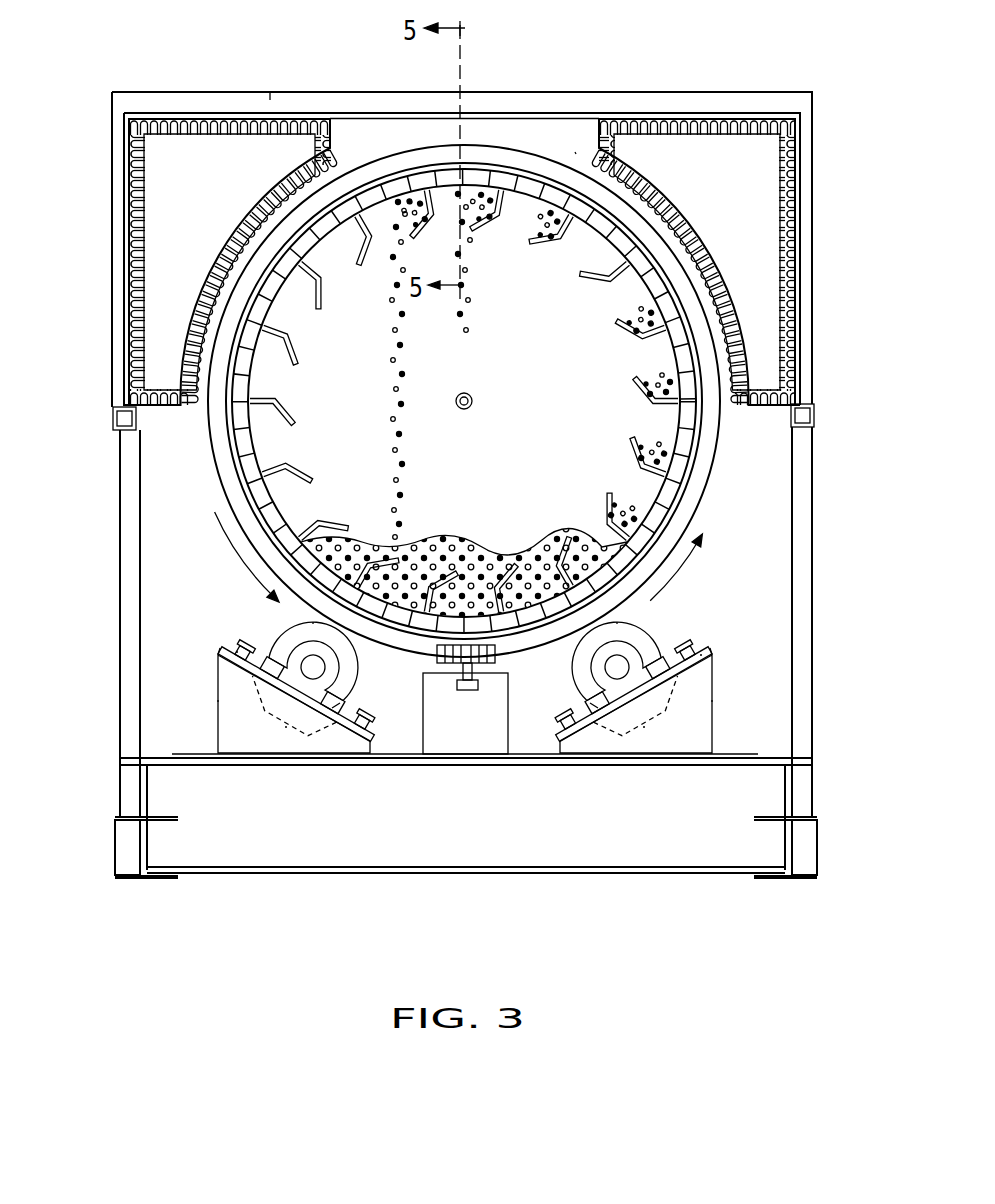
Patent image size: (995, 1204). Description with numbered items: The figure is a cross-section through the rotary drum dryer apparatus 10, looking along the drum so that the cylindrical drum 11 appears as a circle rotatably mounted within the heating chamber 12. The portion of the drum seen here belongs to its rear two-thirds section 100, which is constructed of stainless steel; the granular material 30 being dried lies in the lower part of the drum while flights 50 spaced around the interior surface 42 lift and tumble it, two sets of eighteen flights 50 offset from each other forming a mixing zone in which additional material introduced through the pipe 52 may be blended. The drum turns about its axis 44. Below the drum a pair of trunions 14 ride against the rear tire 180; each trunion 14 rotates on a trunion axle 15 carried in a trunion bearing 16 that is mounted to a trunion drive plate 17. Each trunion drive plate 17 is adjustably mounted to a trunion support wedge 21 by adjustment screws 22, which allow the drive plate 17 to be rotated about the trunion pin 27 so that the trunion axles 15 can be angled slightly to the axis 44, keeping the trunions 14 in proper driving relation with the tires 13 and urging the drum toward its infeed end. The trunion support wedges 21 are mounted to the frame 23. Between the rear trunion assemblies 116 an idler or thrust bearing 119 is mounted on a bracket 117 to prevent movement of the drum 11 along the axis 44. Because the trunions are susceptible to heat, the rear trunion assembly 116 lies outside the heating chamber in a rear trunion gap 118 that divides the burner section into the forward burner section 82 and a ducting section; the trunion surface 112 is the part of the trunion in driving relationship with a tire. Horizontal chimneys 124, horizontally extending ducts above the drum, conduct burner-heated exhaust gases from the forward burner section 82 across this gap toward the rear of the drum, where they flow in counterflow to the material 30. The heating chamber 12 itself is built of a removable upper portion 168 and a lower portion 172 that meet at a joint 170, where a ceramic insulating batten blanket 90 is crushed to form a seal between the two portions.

The rotary drum dryer apparatus 10 is at (501, 83).
The cylindrical drum 11 is at (428, 164).
The heating chamber 12 is at (217, 91).
The circumferential annular steel tires 13 is at (539, 163).
The trunions 14 is at (272, 657).
The trunion axles 15 is at (310, 660).
The trunion bearings 16 is at (332, 652).
The trunion drive plate 17 is at (266, 680).
The trunion support wedge 21 is at (217, 742).
The adjustment screws 22 is at (236, 651).
The frame 23 is at (547, 836).
The trunion pin 27 is at (287, 732).
The granular material 30 is at (648, 438).
The interior surface 42 is at (262, 300).
The axis 44 is at (456, 407).
The flights 50 is at (594, 278).
The pipe 52 is at (468, 393).
The forward burner section 82 is at (275, 91).
The ceramic insulating batten blanket 90 is at (141, 310).
The rear two-thirds section 100 is at (678, 490).
The trunion surface 112 is at (572, 652).
The rear trunion assembly 116 is at (373, 750).
The bracket 117 is at (509, 725).
The rear trunion gap 118 is at (374, 123).
The thrust bearing 119 is at (433, 655).
The horizontal chimneys 124 is at (793, 195).
The upper portion of the heating chamber 168 is at (122, 190).
The joint 170 is at (117, 408).
The lower portion of the heating chamber 172 is at (118, 525).
The rear tire 180 is at (573, 148).